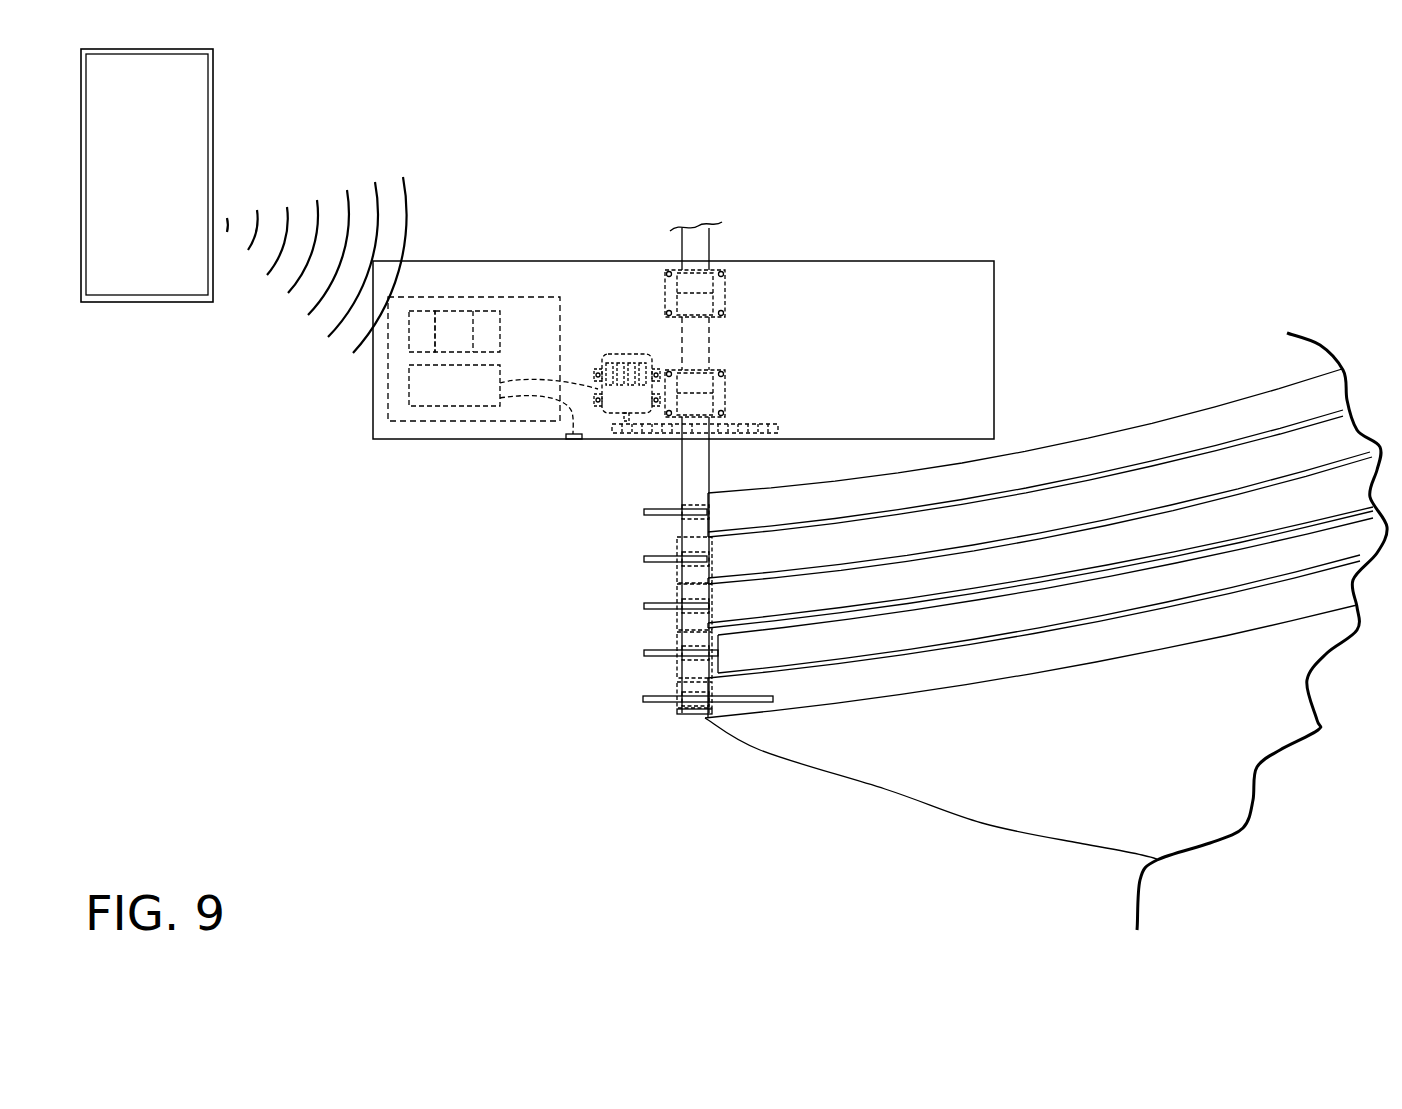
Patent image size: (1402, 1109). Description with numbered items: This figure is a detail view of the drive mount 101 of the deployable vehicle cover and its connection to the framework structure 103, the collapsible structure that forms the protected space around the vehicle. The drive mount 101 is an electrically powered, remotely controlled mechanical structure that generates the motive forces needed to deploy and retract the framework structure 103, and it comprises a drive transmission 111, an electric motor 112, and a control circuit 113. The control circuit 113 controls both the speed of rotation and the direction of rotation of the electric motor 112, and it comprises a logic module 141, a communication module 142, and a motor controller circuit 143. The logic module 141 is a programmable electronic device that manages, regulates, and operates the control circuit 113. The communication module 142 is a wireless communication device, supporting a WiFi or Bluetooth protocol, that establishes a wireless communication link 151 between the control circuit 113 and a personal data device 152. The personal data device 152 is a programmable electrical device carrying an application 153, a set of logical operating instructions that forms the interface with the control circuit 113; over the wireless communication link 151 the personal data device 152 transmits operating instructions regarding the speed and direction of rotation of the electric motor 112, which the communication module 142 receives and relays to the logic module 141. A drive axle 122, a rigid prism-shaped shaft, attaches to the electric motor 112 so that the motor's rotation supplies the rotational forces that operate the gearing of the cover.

The drive mount 101 is at (985, 272).
The framework structure 103 is at (1112, 468).
The drive transmission 111 is at (755, 340).
The electric motor 112 is at (627, 363).
The control circuit 113 is at (535, 297).
The drive axle 122 is at (702, 248).
The logic module 141 is at (485, 323).
The communication module 142 is at (425, 330).
The motor controller circuit 143 is at (470, 398).
The wireless communication link 151 is at (353, 200).
The personal data device 152 is at (146, 49).
The application 153 is at (193, 163).